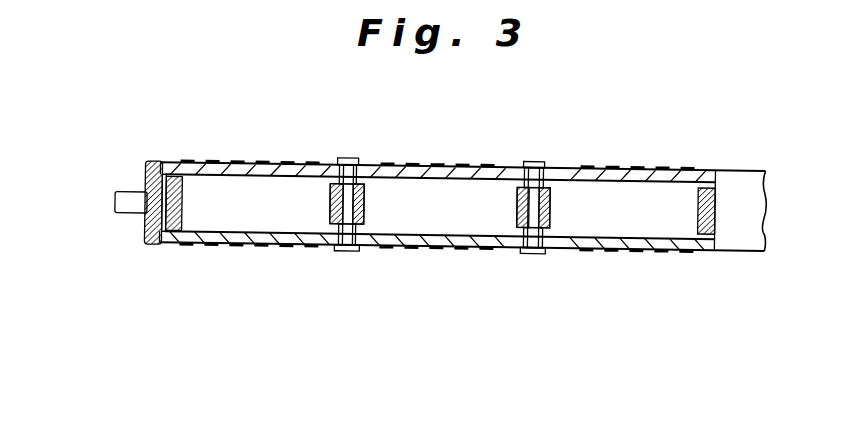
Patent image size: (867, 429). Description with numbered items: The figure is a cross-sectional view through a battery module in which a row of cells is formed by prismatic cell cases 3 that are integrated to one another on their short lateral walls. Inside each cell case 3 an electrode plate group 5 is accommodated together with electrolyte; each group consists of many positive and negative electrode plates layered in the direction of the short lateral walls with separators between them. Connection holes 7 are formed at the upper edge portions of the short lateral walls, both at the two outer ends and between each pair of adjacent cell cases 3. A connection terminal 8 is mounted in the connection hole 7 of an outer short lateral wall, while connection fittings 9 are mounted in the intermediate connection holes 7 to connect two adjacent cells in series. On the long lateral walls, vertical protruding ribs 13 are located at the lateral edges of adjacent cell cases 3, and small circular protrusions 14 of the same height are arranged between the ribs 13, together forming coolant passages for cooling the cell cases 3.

The cell case 3 is at (273, 164).
The electrode plate group 5 is at (247, 233).
The connection hole 7 is at (181, 203).
The connection terminal 8 is at (114, 201).
The connection fitting 9 is at (329, 202).
The protruding rib 13 is at (358, 164).
The circular protrusion 14 is at (313, 163).